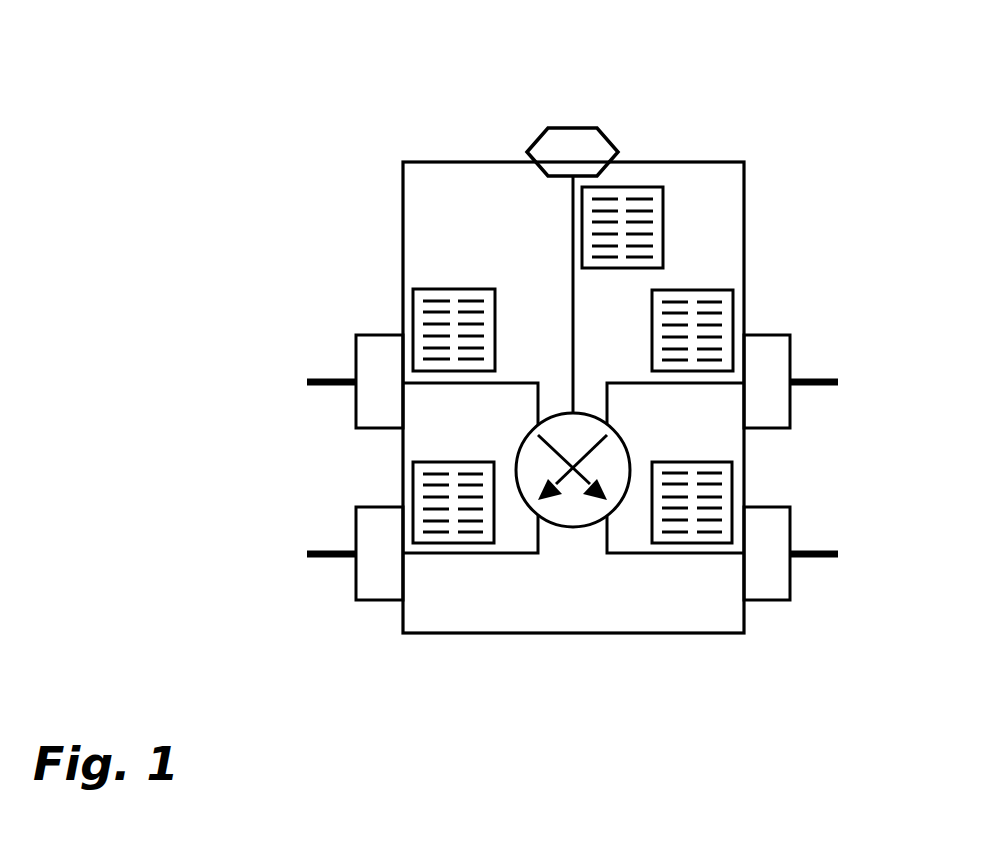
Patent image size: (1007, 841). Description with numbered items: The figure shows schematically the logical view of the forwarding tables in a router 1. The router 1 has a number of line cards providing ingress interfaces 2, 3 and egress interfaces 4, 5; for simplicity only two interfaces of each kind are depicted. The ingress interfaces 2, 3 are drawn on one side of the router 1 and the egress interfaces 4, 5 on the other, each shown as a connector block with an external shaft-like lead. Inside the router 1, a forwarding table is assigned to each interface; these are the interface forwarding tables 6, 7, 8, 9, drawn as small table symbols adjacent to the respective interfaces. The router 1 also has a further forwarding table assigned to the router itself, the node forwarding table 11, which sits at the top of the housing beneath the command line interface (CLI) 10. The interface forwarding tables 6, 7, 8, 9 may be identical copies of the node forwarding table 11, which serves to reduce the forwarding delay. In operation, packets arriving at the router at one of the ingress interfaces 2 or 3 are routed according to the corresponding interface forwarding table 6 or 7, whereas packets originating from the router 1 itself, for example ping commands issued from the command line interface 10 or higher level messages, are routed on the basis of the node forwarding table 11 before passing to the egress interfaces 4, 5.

The router 1 is at (403, 185).
The ingress interface 2 is at (353, 360).
The ingress interface 3 is at (790, 358).
The egress interface 4 is at (353, 532).
The egress interface 5 is at (790, 531).
The interface forwarding table 6 is at (453, 289).
The interface forwarding table 7 is at (692, 290).
The interface forwarding table 8 is at (455, 462).
The interface forwarding table 9 is at (690, 462).
The command line interface 10 is at (537, 140).
The node forwarding table 11 is at (625, 190).